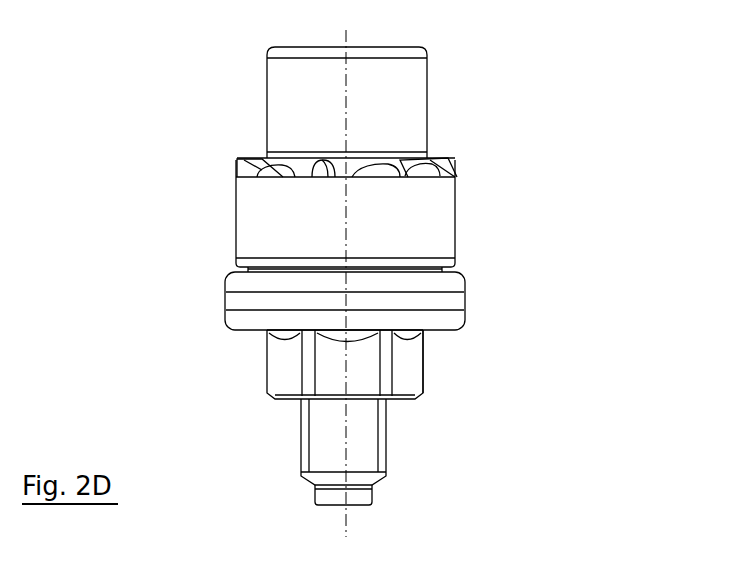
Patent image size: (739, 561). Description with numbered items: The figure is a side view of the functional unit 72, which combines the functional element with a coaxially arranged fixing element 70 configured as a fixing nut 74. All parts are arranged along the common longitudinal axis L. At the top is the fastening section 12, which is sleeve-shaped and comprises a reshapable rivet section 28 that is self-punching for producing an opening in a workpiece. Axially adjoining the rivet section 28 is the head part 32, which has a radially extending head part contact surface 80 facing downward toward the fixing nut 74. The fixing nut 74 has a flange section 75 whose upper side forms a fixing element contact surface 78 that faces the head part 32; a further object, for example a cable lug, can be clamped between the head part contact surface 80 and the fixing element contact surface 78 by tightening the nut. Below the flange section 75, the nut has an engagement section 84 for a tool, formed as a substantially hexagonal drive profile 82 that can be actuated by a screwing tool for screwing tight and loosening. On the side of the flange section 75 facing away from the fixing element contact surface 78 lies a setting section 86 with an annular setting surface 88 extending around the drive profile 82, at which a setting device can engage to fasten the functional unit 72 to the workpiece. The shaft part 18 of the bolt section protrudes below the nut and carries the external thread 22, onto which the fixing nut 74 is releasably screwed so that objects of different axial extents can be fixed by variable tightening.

The fastening section 12 is at (205, 145).
The functional unit 72 is at (570, 61).
The rivet section 28 is at (427, 110).
The head part 32 is at (455, 222).
The fixing element contact surface 78 is at (283, 260).
The head part contact surface 80 is at (422, 270).
The flange section 75 is at (462, 293).
The fixing nut 74 is at (225, 308).
The fixing element 70 is at (502, 314).
The setting section 86 is at (455, 338).
The setting surface 88 is at (443, 352).
The engagement section 84 is at (256, 358).
The drive profile 82 is at (273, 370).
The shaft part 18 is at (388, 422).
The external thread 22 is at (383, 451).
The longitudinal axis L is at (345, 523).